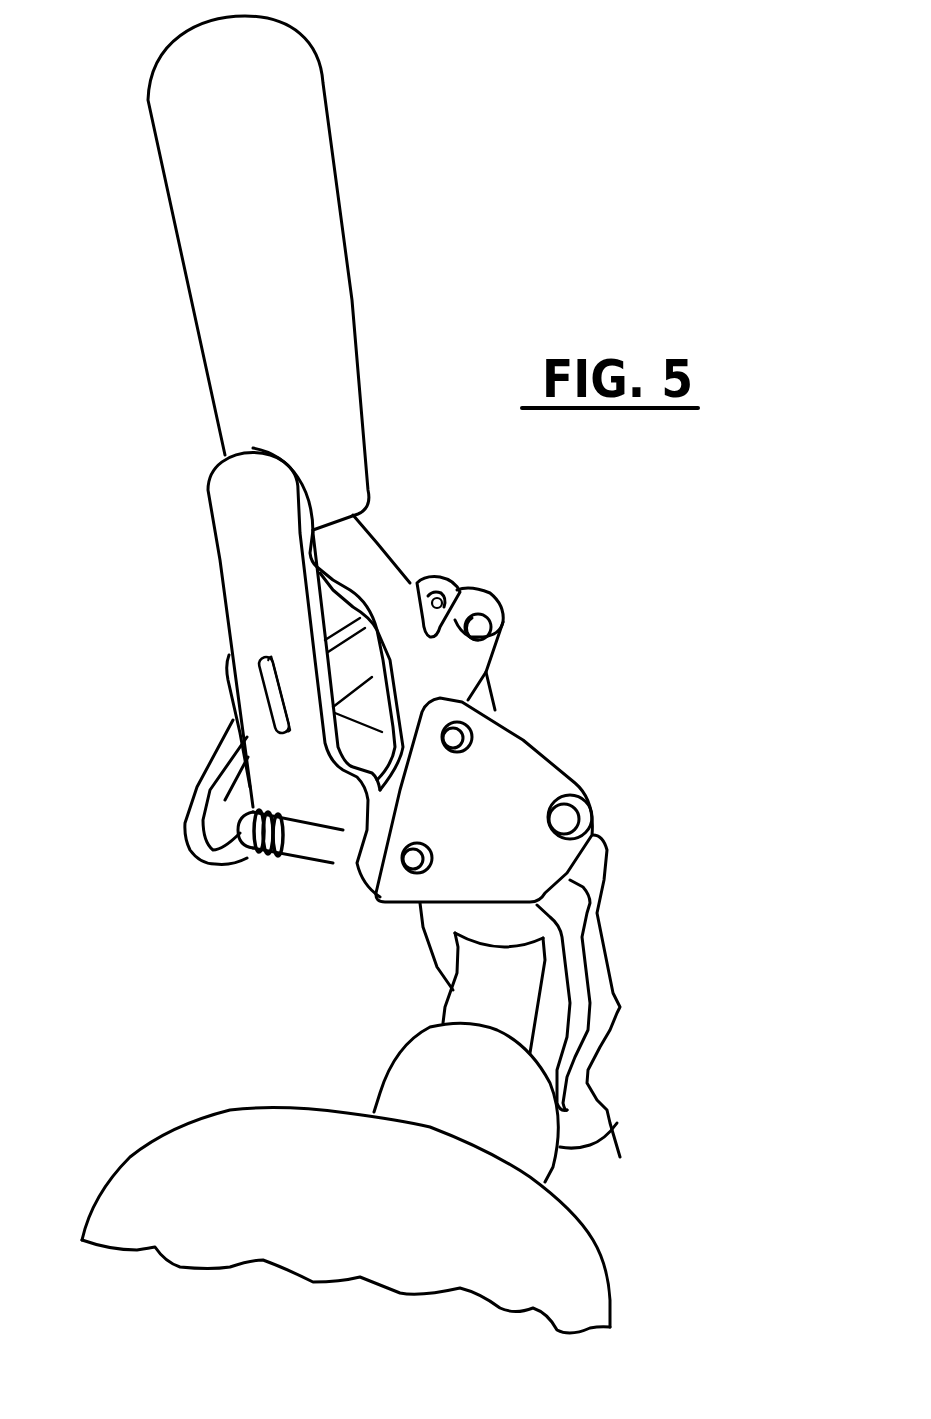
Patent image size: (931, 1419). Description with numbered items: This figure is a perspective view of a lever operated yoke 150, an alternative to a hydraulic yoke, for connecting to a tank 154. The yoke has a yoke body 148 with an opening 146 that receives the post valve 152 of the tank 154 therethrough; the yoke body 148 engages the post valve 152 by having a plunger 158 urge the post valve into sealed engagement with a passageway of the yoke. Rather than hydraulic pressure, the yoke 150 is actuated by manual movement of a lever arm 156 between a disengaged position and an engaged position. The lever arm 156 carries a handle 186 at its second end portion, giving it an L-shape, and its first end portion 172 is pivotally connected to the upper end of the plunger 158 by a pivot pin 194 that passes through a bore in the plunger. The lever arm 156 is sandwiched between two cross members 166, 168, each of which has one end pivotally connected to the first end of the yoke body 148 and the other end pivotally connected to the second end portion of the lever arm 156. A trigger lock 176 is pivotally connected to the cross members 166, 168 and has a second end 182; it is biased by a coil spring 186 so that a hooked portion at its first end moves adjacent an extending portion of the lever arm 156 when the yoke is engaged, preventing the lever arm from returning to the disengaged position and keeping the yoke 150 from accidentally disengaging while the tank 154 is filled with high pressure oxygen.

The opening 146 is at (535, 957).
The yoke body 148 is at (600, 1005).
The lever operated yoke 150 is at (567, 830).
The post valve 152 is at (600, 864).
The tank 154 is at (563, 1242).
The lever arm 156 is at (362, 538).
The plunger 158 is at (487, 697).
The cross member 166 is at (205, 777).
The cross member 168 is at (518, 752).
The first end portion of the lever arm 172 is at (480, 573).
The trigger lock 176 is at (227, 625).
The second end of the trigger lock 182 is at (240, 541).
The handle 186 is at (350, 233).
The pivot pin 194 is at (485, 628).